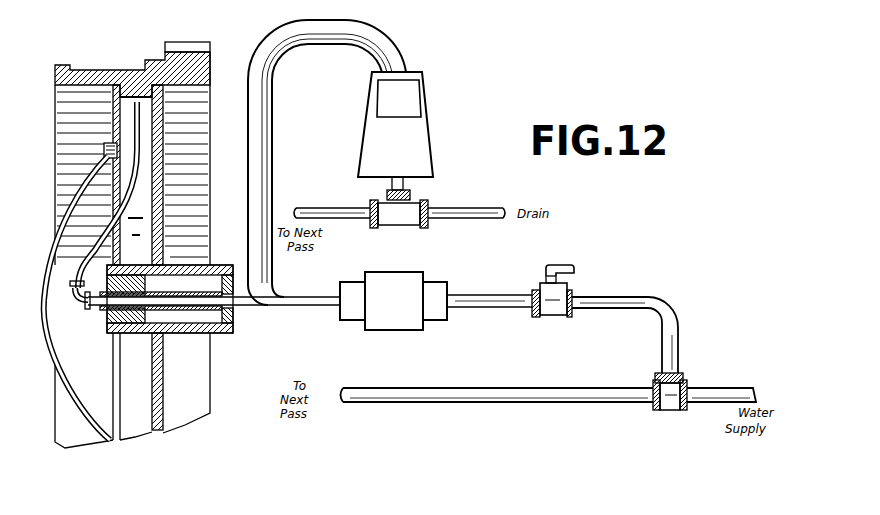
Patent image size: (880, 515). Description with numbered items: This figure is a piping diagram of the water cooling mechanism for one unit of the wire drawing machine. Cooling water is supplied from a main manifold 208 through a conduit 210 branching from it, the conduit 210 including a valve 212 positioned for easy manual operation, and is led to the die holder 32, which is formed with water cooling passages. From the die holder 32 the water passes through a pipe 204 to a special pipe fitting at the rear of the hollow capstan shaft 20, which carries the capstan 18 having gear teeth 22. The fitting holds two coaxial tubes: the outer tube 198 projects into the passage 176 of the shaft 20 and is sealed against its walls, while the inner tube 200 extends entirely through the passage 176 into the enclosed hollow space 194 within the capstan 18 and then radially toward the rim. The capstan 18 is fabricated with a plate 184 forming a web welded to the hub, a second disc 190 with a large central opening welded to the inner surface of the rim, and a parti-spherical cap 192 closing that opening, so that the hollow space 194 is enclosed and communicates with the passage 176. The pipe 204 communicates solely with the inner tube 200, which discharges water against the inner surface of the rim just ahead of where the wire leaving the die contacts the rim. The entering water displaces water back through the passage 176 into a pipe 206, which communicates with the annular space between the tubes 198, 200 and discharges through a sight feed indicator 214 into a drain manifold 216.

The capstan 18 is at (78, 73).
The capstan shaft 20 is at (187, 333).
The gear teeth 22 is at (190, 48).
The die holder 32 is at (400, 332).
The passage 176 is at (183, 326).
The plate 184 is at (166, 425).
The second disc 190 is at (117, 428).
The parti-spherical cap 192 is at (62, 388).
The hollow space 194 is at (95, 405).
The outer tube 198 is at (187, 288).
The inner tube 200 is at (88, 233).
The pipe 204 is at (297, 301).
The pipe 206 is at (262, 157).
The main manifold 208 is at (578, 396).
The conduit 210 is at (486, 297).
The valve 212 is at (556, 307).
The sight feed indicator 214 is at (430, 105).
The drain manifold 216 is at (460, 210).